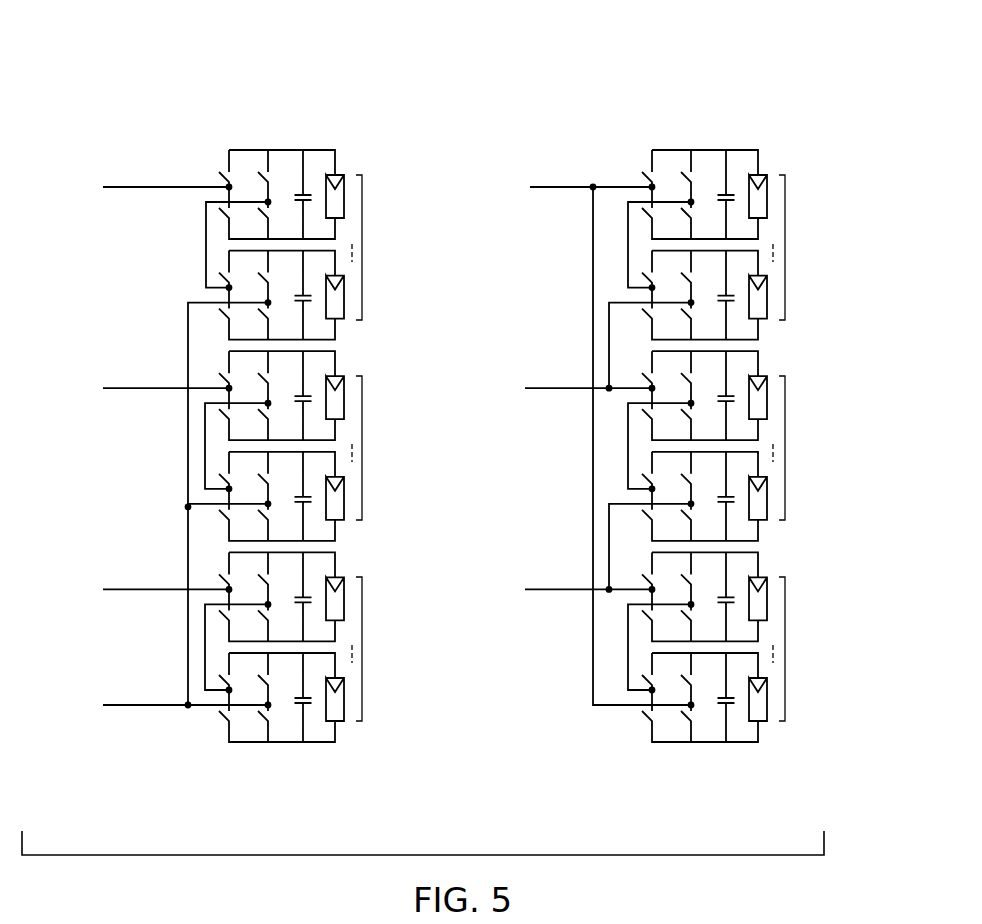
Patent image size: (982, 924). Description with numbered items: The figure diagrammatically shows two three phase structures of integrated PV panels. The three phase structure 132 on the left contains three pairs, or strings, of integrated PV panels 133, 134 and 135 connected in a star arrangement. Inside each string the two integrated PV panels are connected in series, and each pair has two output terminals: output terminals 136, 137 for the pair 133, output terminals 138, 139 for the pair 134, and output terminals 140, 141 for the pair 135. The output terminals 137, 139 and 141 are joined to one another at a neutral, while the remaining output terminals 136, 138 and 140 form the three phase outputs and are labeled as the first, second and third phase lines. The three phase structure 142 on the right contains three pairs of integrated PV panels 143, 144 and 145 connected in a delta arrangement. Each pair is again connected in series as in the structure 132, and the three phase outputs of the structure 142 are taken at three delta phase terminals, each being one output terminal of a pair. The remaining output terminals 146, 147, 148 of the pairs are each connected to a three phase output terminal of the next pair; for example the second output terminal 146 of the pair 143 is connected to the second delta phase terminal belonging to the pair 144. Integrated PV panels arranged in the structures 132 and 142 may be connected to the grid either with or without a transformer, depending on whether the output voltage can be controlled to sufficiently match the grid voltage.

The three phase structure 132 is at (320, 70).
The pair of integrated PV panels 133 is at (362, 248).
The pair of integrated PV panels 134 is at (362, 448).
The pair of integrated PV panels 135 is at (362, 649).
The output terminal 136 is at (175, 186).
The output terminal 137 is at (188, 320).
The output terminal 138 is at (175, 387).
The output terminal 139 is at (188, 523).
The output terminal 140 is at (168, 589).
The output terminal 141 is at (175, 704).
The three phase structure 142 is at (735, 72).
The pair of integrated PV panels 143 is at (785, 248).
The pair of integrated PV panels 144 is at (785, 448).
The pair of integrated PV panels 145 is at (785, 649).
The output terminal 146 is at (609, 320).
The output terminal 147 is at (609, 523).
The output terminal 148 is at (608, 708).